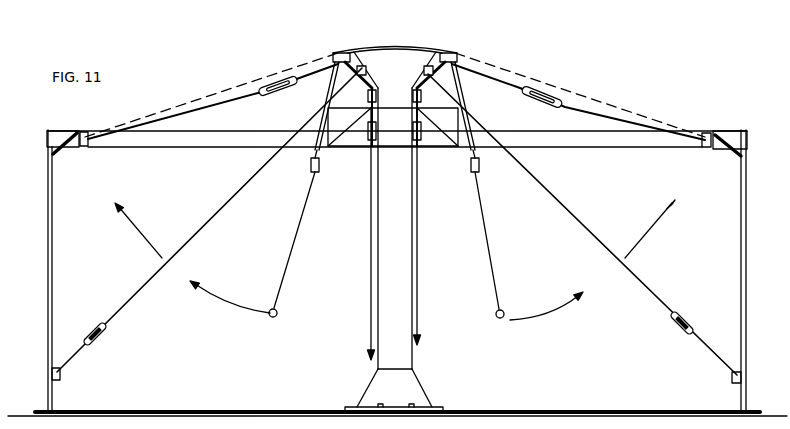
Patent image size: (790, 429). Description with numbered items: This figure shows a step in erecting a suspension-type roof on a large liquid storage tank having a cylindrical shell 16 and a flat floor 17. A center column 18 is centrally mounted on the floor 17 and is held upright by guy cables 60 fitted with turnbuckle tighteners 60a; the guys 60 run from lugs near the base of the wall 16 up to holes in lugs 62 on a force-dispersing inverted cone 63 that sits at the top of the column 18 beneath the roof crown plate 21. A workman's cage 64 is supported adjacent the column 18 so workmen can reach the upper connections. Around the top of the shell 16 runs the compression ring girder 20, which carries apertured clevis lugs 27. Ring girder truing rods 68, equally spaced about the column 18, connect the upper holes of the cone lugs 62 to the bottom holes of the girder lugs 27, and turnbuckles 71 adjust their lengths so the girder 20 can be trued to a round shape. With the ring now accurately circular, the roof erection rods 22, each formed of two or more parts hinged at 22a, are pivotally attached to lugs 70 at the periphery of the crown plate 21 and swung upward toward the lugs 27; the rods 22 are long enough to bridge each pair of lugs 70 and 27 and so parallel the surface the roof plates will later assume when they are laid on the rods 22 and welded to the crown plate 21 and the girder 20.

The cylindrical side wall or shell 16 is at (52, 250).
The flat floor 17 is at (166, 409).
The center column 18 is at (410, 266).
The compression ring girder 20 is at (72, 129).
The roof crown plate 21 is at (393, 44).
The roof erection rods 22 is at (306, 82).
The hinge 22a is at (313, 160).
The apertured clevis lugs 27 is at (115, 113).
The guy cables 60 is at (194, 238).
The turnbuckle tighteners 60a is at (103, 328).
The lugs 62 is at (413, 76).
The force-dispersing inverted cone 63 is at (418, 66).
The workman's cage 64 is at (458, 147).
The ring girder truing rods 68 is at (258, 92).
The lugs 70 is at (336, 53).
The turnbuckles 71 is at (570, 68).